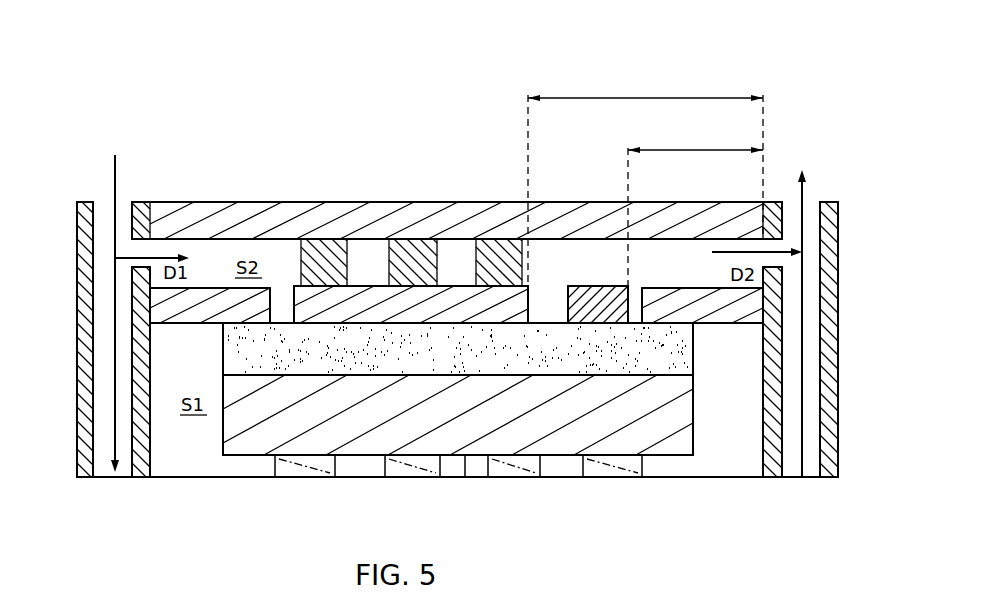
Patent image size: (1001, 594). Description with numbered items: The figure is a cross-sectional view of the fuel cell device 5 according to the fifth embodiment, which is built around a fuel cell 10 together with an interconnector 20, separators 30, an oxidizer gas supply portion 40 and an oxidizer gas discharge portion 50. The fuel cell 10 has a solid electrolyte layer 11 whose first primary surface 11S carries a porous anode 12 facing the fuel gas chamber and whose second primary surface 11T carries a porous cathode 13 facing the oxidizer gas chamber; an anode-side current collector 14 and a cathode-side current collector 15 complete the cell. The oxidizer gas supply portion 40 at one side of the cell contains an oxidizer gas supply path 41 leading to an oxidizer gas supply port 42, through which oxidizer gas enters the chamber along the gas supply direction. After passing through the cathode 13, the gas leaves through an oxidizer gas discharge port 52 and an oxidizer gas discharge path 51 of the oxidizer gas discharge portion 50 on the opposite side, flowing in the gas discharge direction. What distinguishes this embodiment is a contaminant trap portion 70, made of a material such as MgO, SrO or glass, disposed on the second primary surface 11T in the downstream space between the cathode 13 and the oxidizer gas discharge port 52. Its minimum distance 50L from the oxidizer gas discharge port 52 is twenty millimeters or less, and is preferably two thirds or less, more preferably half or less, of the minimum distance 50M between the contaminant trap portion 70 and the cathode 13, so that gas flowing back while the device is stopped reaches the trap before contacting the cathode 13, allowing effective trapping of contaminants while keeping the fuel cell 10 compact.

The fuel cell device 5 is at (780, 54).
The fuel cell 10 is at (467, 395).
The solid electrolyte layer 11 is at (375, 372).
The second primary surface 11T is at (548, 316).
The first primary surface 11S is at (639, 386).
The anode 12 is at (470, 440).
The cathode 13 is at (372, 320).
The anode-side current collector 14 is at (290, 460).
The cathode-side current collector 15 is at (410, 255).
The interconnector 20 is at (290, 201).
The separators 30 is at (165, 310).
The oxidizer gas supply portion 40 is at (82, 202).
The oxidizer gas supply path 41 is at (102, 462).
The oxidizer gas supply port 42 is at (151, 246).
The oxidizer gas discharge portion 50 is at (830, 202).
The oxidizer gas discharge path 51 is at (790, 468).
The oxidizer gas discharge port 52 is at (758, 244).
The minimum distance 50M is at (690, 80).
The minimum distance 50L is at (680, 149).
The contaminant trap portion 70 is at (590, 315).